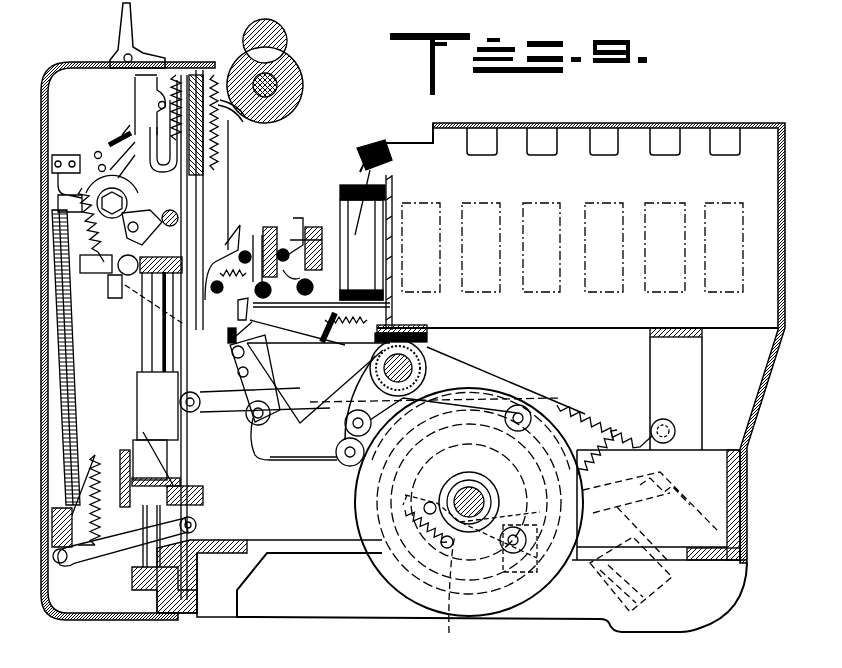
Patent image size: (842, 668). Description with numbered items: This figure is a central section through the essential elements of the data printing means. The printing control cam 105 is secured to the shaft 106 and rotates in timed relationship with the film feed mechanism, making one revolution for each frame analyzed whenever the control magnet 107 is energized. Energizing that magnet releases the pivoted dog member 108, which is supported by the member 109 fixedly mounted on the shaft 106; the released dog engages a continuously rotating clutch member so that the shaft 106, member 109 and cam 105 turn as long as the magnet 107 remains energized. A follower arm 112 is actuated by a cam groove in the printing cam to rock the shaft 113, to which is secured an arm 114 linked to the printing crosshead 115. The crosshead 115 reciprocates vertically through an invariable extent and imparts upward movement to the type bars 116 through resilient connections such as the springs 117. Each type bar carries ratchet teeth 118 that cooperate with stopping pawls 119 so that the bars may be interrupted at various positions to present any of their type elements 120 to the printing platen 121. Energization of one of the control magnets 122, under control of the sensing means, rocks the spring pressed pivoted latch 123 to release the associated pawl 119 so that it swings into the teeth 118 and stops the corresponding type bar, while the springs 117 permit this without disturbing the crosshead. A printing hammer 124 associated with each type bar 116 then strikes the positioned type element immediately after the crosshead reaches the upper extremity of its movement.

The printing control cam 105 is at (356, 505).
The shaft 106 is at (468, 492).
The control magnet 107 is at (665, 493).
The pivoted dog member 108 is at (466, 591).
The member 109 is at (392, 542).
The follower arm 112 is at (458, 373).
The shaft 113 is at (420, 353).
The arm 114 is at (217, 420).
The printing crosshead 115 is at (127, 392).
The type bars 116 is at (198, 73).
The springs 117 is at (70, 542).
The ratchet teeth 118 is at (192, 340).
The stopping pawls 119 is at (177, 279).
The type elements 120 is at (246, 120).
The printing platen 121 is at (305, 80).
The control magnets 122 is at (343, 222).
The spring pressed pivoted latch 123 is at (238, 220).
The printing hammer 124 is at (135, 100).